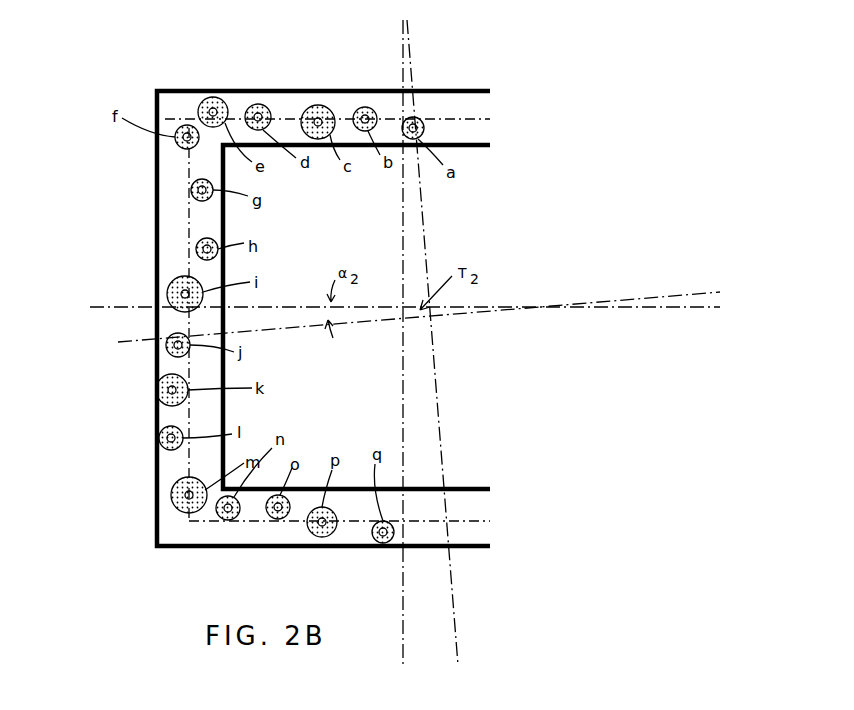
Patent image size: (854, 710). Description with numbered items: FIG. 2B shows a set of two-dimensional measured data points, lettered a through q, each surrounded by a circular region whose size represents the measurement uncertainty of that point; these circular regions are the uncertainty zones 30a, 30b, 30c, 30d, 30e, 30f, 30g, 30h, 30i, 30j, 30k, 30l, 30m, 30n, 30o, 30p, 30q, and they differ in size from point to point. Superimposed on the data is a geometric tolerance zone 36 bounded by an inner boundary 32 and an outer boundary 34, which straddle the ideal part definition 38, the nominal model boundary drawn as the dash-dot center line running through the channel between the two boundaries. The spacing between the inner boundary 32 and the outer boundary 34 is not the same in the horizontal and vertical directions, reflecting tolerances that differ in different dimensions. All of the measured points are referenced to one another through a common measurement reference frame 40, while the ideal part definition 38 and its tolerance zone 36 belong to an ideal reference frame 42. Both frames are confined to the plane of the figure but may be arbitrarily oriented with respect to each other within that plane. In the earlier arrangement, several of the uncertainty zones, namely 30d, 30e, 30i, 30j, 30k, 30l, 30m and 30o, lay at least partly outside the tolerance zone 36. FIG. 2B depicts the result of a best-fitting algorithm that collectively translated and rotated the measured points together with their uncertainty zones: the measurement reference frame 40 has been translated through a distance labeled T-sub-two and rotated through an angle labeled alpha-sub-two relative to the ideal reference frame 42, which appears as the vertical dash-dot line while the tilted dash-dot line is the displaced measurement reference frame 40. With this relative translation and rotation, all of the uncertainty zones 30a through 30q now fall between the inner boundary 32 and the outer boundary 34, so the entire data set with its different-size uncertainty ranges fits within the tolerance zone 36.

The uncertainty zone 30a is at (413, 117).
The uncertainty zone 30b is at (365, 107).
The uncertainty zone 30c is at (318, 105).
The uncertainty zone 30d is at (258, 104).
The uncertainty zone 30e is at (213, 97).
The uncertainty zone 30f is at (187, 125).
The uncertainty zone 30g is at (191, 190).
The uncertainty zone 30h is at (196, 249).
The uncertainty zone 30i is at (167, 292).
The uncertainty zone 30j is at (166, 345).
The uncertainty zone 30k is at (156, 390).
The uncertainty zone 30l is at (159, 440).
The uncertainty zone 30m is at (171, 495).
The uncertainty zone 30n is at (228, 520).
The uncertainty zone 30o is at (278, 519).
The uncertainty zone 30p is at (318, 538).
The uncertainty zone 30q is at (383, 543).
The inner boundary 32 is at (223, 215).
The outer boundary 34 is at (157, 160).
The geometric tolerance zone 36 is at (482, 110).
The ideal part definition 38 is at (469, 520).
The measurement reference frame 40 is at (437, 405).
The ideal reference frame 42 is at (400, 382).